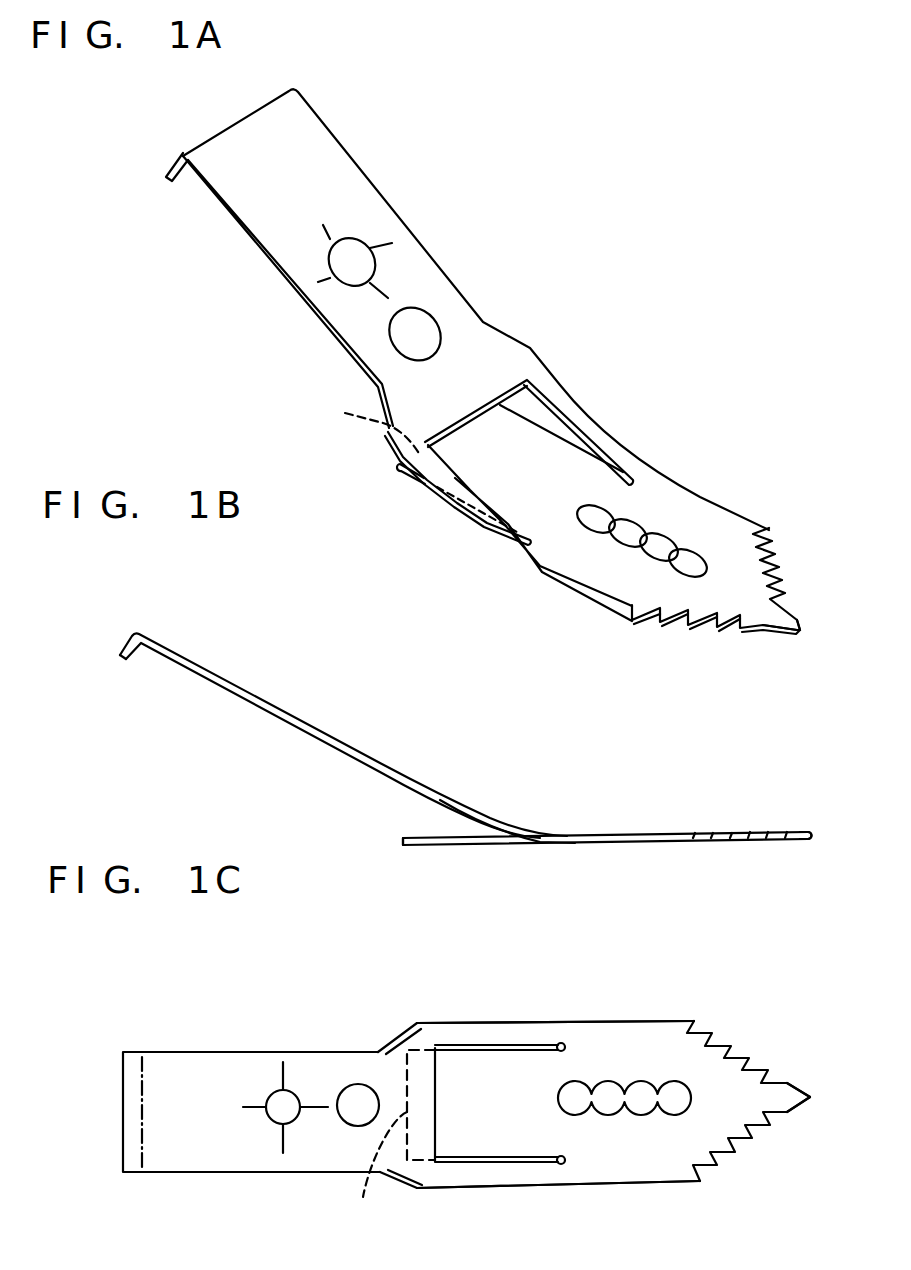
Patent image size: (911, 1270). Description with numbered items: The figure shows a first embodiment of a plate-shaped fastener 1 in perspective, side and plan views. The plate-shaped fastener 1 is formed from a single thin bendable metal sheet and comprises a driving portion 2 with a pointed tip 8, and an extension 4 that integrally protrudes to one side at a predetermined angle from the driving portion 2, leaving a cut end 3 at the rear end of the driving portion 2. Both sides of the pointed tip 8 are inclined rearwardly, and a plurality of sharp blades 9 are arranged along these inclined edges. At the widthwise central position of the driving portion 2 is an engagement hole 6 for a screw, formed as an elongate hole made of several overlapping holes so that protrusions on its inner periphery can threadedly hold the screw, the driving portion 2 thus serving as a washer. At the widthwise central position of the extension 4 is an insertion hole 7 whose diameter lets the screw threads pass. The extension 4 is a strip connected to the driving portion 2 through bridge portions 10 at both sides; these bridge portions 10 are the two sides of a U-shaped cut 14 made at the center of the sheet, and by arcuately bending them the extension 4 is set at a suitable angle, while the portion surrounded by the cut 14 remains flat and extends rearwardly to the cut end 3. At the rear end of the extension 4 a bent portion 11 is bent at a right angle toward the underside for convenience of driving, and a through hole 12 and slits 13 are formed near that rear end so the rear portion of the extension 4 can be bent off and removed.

In FIG. 1A, the plate-shaped fastener 1 is at (467, 384).
In FIG. 1B, the plate-shaped fastener 1 is at (448, 767).
In FIG. 1C, the plate-shaped fastener 1 is at (450, 1102).
In FIG. 1A, the driving portion 2 is at (609, 533).
In FIG. 1B, the driving portion 2 is at (620, 867).
In FIG. 1C, the driving portion 2 is at (609, 1102).
In FIG. 1A, the cut end 3 is at (371, 427).
In FIG. 1B, the cut end 3 is at (400, 843).
In FIG. 1C, the cut end 3 is at (397, 1141).
In FIG. 1A, the extension 4 is at (270, 195).
In FIG. 1B, the extension 4 is at (245, 688).
In FIG. 1C, the extension 4 is at (197, 1150).
In FIG. 1A, the engagement hole 6 is at (650, 556).
In FIG. 1C, the engagement hole 6 is at (657, 1100).
In FIG. 1A, the insertion hole 7 is at (420, 335).
In FIG. 1C, the insertion hole 7 is at (358, 1093).
In FIG. 1A, the pointed tip 8 is at (786, 626).
In FIG. 1B, the pointed tip 8 is at (812, 838).
In FIG. 1C, the pointed tip 8 is at (812, 1098).
In FIG. 1A, the sharp blades 9 is at (778, 553).
In FIG. 1B, the sharp blades 9 is at (730, 838).
In FIG. 1C, the sharp blades 9 is at (723, 1040).
In FIG. 1A, the bridge portions 10 is at (596, 432).
In FIG. 1B, the bridge portions 10 is at (490, 823).
In FIG. 1C, the bridge portions 10 is at (467, 1035).
In FIG. 1A, the bent portion 11 is at (164, 167).
In FIG. 1B, the bent portion 11 is at (120, 643).
In FIG. 1C, the bent portion 11 is at (123, 1110).
In FIG. 1A, the through hole 12 is at (358, 268).
In FIG. 1C, the through hole 12 is at (273, 1102).
In FIG. 1A, the slits 13 is at (386, 245).
In FIG. 1C, the slits 13 is at (288, 1068).
In FIG. 1C, the cut 14 is at (523, 1043).